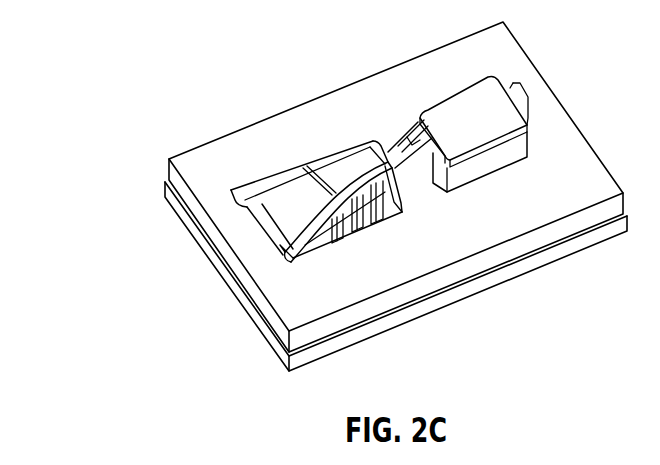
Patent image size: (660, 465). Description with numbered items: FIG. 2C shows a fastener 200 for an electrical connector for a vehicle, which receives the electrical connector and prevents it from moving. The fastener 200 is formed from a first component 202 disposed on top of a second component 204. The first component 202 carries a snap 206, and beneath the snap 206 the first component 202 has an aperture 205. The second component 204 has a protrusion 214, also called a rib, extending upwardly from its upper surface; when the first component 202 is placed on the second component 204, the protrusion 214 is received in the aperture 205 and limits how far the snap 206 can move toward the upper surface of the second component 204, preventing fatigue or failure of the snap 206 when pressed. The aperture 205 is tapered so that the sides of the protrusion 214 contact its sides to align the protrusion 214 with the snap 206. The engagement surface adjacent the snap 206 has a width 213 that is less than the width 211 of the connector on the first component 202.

The fastener 200 is at (139, 69).
The first component 202 is at (197, 157).
The second component 204 is at (262, 331).
The aperture 205 is at (293, 250).
The snap 206 is at (303, 197).
The width of the connector 211 is at (552, 55).
The width of the engagement surface 213 is at (368, 148).
The protrusion 214 is at (347, 212).